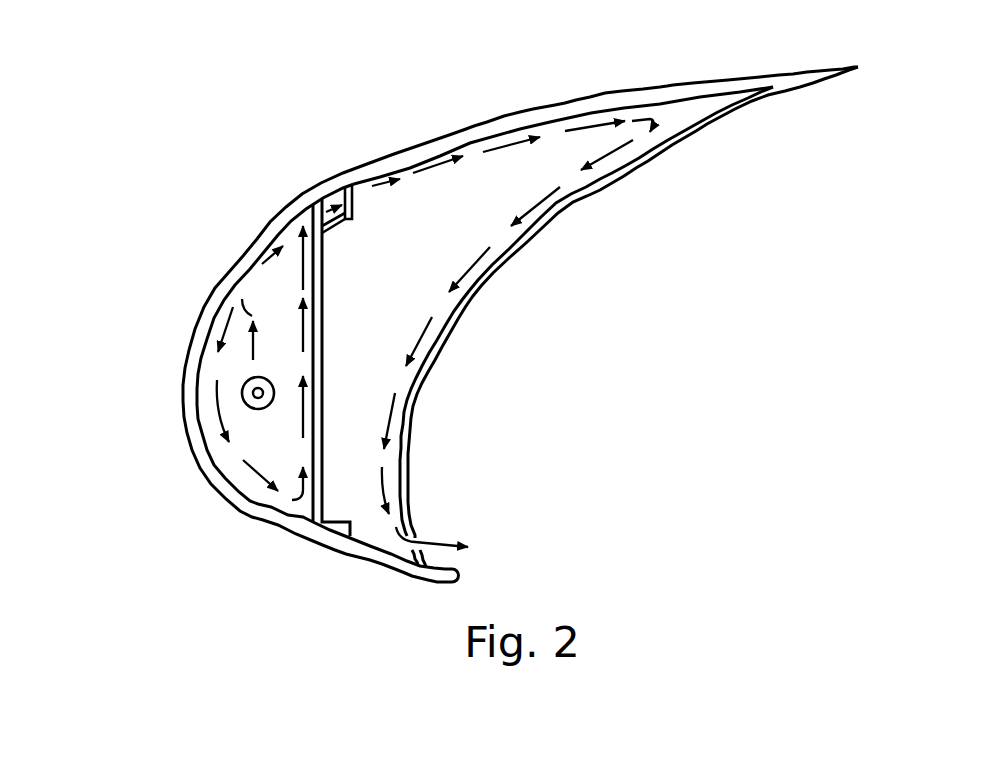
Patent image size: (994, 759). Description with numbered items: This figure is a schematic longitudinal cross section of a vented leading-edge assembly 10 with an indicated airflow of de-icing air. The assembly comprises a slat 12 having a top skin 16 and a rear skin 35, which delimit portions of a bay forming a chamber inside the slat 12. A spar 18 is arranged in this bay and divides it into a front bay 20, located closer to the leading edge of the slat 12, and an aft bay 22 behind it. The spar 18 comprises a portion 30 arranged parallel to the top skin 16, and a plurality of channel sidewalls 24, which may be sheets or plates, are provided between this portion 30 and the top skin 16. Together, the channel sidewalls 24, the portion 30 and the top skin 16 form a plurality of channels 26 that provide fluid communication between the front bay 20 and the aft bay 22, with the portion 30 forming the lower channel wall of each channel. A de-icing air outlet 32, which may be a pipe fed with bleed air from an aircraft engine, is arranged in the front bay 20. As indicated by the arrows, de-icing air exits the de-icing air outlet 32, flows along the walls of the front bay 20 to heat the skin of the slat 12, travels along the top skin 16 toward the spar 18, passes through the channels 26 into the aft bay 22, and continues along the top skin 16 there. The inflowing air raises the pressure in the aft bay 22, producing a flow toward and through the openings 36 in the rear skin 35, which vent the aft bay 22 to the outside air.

The vented leading-edge assembly 10 is at (161, 278).
The slat 12 is at (217, 463).
The top skin 16 is at (452, 136).
The spar 18 is at (320, 347).
The front bay 20 is at (273, 293).
The aft bay 22 is at (537, 167).
The channel sidewalls 24 is at (345, 205).
The channels 26 is at (357, 186).
The portion of the spar 30 is at (333, 228).
The de-icing air outlet 32 is at (247, 381).
The rear skin 35 is at (487, 277).
The openings 36 is at (417, 542).